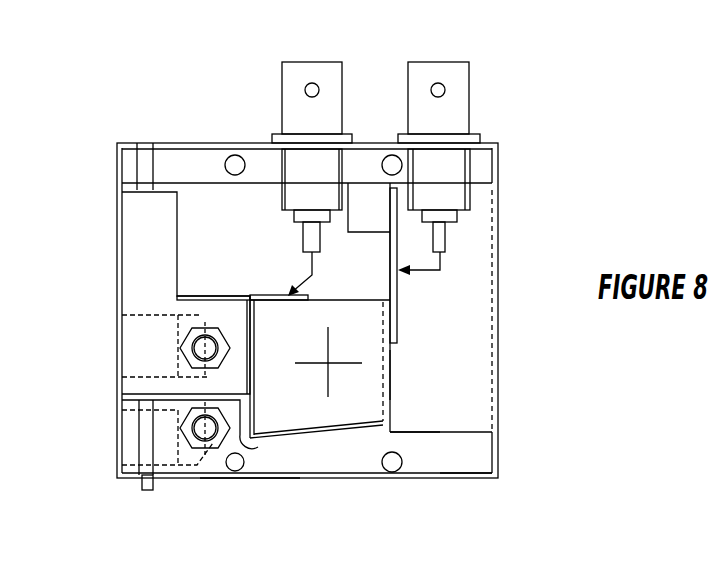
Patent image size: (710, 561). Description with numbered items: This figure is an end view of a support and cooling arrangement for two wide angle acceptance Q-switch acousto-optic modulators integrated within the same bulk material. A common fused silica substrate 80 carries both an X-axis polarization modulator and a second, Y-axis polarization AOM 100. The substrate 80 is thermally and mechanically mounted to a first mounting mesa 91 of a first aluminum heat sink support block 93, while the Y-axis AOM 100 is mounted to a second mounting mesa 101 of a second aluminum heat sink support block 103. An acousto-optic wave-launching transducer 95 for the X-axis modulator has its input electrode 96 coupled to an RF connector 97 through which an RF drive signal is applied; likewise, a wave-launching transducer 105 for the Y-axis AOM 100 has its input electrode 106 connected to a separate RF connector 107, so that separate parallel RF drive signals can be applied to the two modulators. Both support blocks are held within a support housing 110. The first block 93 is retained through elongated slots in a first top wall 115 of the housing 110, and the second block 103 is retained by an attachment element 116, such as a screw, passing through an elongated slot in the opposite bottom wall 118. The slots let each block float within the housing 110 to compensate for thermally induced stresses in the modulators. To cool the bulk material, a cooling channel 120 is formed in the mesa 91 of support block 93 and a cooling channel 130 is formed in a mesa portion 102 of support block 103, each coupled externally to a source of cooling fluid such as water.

The common fused silica substrate 80 is at (350, 297).
The first mounting mesa 91 is at (247, 293).
The first heat sink support block 93 is at (162, 278).
The acousto-optic wave-launching transducer 95 is at (330, 295).
The input electrode 96 is at (263, 295).
The RF connector 97 is at (303, 62).
The second AOM 100 is at (390, 375).
The second mounting mesa 101 is at (380, 440).
The mesa portion 102 is at (213, 400).
The second heat sink support block 103 is at (478, 452).
The acousto-optic wave-launching transducer 105 is at (385, 355).
The input electrode 106 is at (397, 318).
The RF connector 107 is at (453, 70).
The support housing 110 is at (189, 137).
The first top wall 115 is at (125, 150).
The attachment element 116 is at (142, 483).
The bottom wall 118 is at (277, 480).
The cooling channel 120 is at (205, 330).
The cooling channel 130 is at (212, 427).